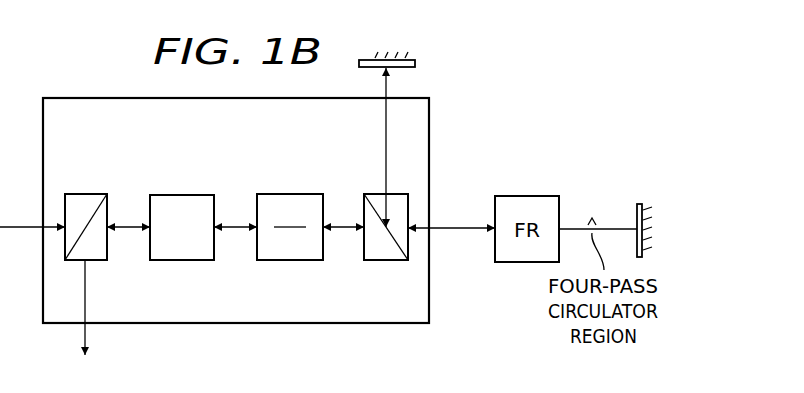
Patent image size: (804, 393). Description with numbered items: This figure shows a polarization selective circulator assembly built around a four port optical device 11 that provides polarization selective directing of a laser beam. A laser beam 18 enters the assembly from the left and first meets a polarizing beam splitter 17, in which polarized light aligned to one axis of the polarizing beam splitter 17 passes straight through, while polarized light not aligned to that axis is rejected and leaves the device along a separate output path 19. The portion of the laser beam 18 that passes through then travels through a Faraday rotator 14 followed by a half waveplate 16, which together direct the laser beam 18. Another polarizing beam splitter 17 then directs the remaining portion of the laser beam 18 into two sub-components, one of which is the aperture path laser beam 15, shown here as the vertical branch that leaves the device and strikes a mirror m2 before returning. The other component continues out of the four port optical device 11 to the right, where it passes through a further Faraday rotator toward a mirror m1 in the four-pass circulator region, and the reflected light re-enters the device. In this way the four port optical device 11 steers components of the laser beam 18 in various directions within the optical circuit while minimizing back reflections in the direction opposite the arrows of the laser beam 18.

The four port optical device 11 is at (258, 323).
The Faraday rotator 14 is at (180, 194).
The aperture path laser beam 15 is at (386, 165).
The half waveplate 16 is at (290, 261).
The polarizing beam splitter 17 is at (85, 194).
The laser beam 18 is at (20, 228).
The output port 19 is at (85, 287).
The mirror m1 is at (664, 230).
The mirror m2 is at (387, 43).